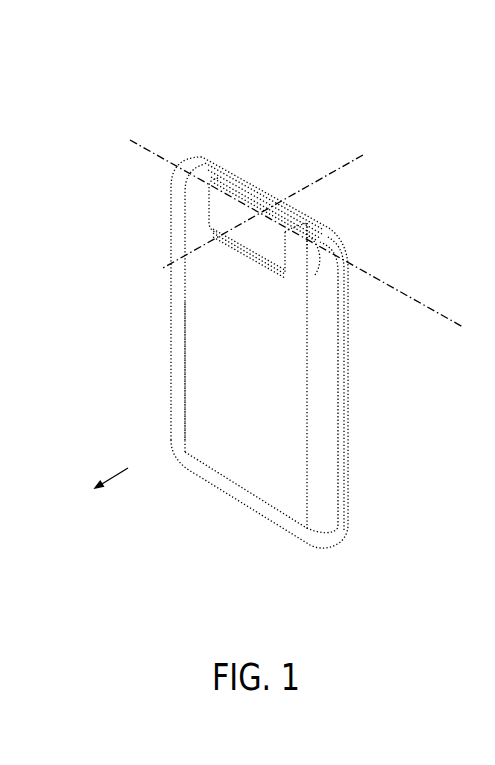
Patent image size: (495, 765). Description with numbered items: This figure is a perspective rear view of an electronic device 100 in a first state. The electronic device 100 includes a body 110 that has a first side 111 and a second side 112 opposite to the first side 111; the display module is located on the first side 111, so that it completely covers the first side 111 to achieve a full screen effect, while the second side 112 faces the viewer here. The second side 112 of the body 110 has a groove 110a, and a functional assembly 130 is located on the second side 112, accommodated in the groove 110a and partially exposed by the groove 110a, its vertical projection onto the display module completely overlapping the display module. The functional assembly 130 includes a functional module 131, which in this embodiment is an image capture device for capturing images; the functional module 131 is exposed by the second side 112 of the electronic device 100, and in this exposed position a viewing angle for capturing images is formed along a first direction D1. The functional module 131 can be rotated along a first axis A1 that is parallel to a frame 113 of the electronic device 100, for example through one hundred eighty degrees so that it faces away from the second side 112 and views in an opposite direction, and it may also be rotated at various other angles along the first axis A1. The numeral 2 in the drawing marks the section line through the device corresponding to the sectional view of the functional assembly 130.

The electronic device 100 is at (87, 63).
The body 110 is at (327, 380).
The groove 110a is at (241, 180).
The first side 111 is at (355, 350).
The second side 112 is at (206, 386).
The frame 113 is at (312, 222).
The functional assembly 130 is at (209, 222).
The functional module 131 is at (270, 282).
The first axis A1 is at (130, 140).
The first direction D1 is at (108, 473).
The section line 2- 2 is at (363, 155).